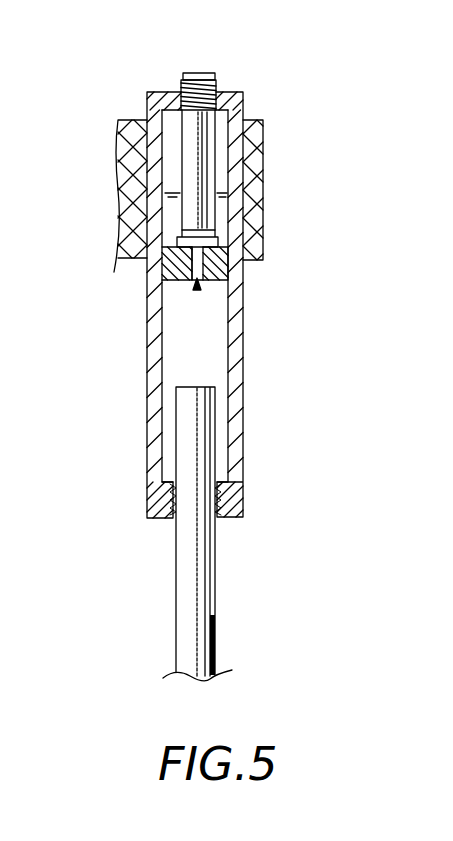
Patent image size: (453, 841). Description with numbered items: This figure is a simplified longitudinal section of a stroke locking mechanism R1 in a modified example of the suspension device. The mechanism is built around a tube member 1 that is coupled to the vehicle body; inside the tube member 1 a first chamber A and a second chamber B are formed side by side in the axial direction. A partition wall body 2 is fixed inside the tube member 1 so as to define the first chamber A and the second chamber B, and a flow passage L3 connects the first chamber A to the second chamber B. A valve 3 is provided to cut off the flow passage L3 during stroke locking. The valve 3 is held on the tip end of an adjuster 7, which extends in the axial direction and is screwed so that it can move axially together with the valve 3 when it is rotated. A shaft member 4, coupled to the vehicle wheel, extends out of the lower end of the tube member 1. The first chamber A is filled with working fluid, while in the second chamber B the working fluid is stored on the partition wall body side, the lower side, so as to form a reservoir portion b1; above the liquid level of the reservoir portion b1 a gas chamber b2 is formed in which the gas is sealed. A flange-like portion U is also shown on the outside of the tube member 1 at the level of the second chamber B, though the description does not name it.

The stroke locking mechanism R1 is at (307, 128).
The tube member 1 is at (243, 377).
The flange U is at (257, 203).
The second chamber B is at (222, 138).
The gas chamber b2 is at (176, 110).
The adjuster 7 is at (190, 160).
The valve 3 is at (218, 240).
The reservoir portion b1 is at (163, 217).
The partition wall body 2 is at (163, 280).
The flow passage L3 is at (197, 284).
The first chamber A is at (185, 359).
The shaft member 4 is at (207, 620).